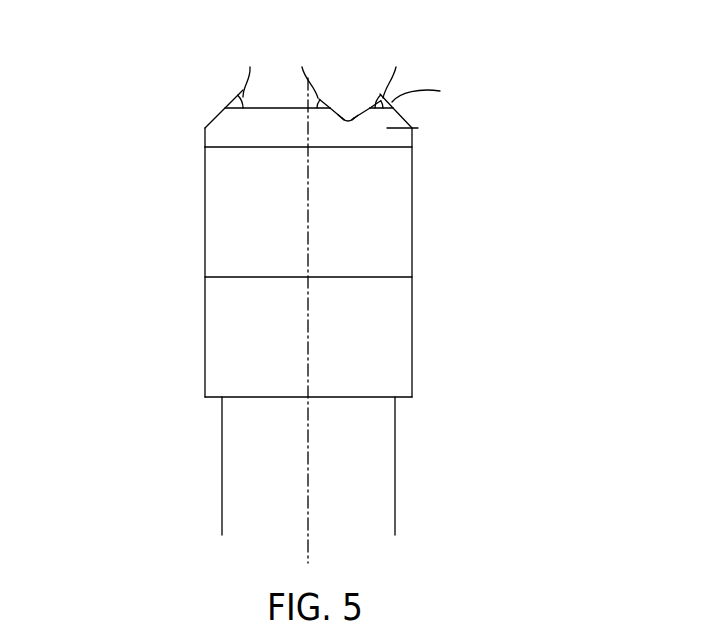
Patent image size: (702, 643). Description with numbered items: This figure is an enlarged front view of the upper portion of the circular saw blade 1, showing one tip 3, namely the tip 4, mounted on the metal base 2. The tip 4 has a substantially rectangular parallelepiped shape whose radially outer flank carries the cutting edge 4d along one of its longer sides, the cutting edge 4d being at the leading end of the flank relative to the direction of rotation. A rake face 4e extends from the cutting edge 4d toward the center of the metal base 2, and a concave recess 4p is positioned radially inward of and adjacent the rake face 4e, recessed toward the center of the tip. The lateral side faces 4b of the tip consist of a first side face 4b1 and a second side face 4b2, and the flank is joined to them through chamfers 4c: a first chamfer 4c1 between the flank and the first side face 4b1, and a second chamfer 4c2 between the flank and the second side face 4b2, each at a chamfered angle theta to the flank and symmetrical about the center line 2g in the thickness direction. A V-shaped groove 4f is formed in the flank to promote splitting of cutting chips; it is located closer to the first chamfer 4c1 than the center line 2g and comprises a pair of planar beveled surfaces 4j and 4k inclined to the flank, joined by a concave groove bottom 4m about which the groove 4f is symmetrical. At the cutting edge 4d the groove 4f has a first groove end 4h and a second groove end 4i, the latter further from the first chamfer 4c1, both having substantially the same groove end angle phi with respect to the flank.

The circular saw blade 1 is at (146, 332).
The metal base 2 is at (212, 445).
The center line 2g is at (308, 438).
The tip 3 is at (306, 199).
The tip 4 is at (211, 60).
The side face 4b is at (308, 262).
The first side face 4b1 is at (413, 253).
The second side face 4b2 is at (205, 262).
The chamfer 4c is at (306, 109).
The first chamfer 4c1 is at (405, 118).
The second chamfer 4c2 is at (213, 119).
The cutting edge 4d is at (278, 108).
The rake face 4e is at (220, 135).
The groove 4f is at (350, 106).
The first groove end 4h is at (358, 122).
The second groove end 4i is at (338, 116).
The beveled surface 4j is at (355, 125).
The beveled surface 4k is at (343, 124).
The groove bottom 4m is at (348, 126).
The recess 4p is at (228, 212).